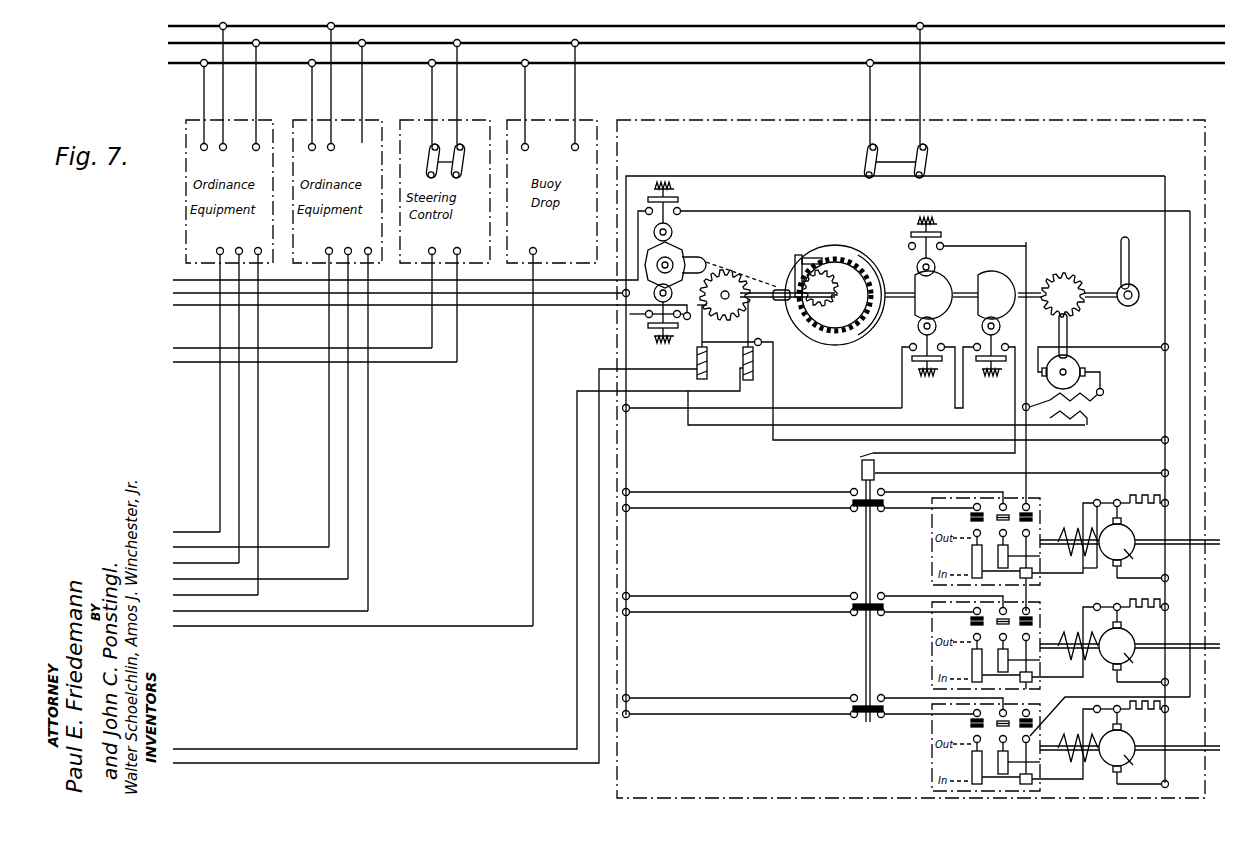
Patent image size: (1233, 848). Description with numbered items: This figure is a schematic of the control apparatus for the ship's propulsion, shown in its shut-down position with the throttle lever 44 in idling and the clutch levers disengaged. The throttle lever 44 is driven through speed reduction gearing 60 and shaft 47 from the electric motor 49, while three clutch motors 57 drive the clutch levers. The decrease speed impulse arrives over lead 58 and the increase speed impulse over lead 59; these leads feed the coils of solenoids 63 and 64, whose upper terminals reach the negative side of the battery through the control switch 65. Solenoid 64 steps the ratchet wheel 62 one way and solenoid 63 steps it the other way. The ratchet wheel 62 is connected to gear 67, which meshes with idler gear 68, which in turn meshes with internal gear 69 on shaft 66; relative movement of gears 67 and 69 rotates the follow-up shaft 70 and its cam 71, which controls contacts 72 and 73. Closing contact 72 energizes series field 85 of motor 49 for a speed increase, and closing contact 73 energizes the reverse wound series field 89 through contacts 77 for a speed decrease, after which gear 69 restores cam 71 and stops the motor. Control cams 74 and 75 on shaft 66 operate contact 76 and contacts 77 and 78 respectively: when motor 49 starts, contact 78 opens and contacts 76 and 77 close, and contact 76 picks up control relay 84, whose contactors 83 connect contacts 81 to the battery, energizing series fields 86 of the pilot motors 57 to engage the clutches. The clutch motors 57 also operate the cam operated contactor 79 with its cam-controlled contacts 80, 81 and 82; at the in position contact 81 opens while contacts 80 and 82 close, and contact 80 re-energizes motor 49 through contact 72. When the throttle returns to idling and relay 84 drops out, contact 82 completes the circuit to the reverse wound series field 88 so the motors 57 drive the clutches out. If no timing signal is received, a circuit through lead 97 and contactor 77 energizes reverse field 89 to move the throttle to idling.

The throttle lever 44 is at (1121, 248).
The shaft 47 is at (1100, 293).
The electric motor 49 is at (1088, 368).
The clutch motors 57 is at (1125, 549).
The lead 58 is at (458, 559).
The lead 59 is at (461, 748).
The speed reduction gearing 60 is at (1084, 318).
The ratchet wheel 62 is at (737, 284).
The solenoid 63 is at (886, 362).
The solenoid 64 is at (705, 377).
The control switch 65 is at (932, 161).
The shaft 66 is at (1036, 287).
The gear 67 is at (843, 283).
The idler gear 68 is at (826, 262).
The internal gear 69 is at (814, 256).
The follow-up shaft 70 is at (705, 265).
The follow-up cam 71 is at (673, 251).
The contact 72 is at (680, 204).
The contact 73 is at (657, 323).
The control cam 74 is at (1000, 286).
The control cam 75 is at (938, 284).
The contact 76 is at (944, 385).
The contact 77 is at (798, 364).
The contact 78 is at (943, 237).
The cam operated contactor 79 is at (930, 525).
The contact 80 is at (1033, 513).
The contact 81 is at (1006, 510).
The contact 82 is at (970, 526).
The contactors 83 is at (858, 511).
The control relay 84 is at (860, 467).
The series field 85 is at (1103, 396).
The series fields 86 is at (1068, 540).
The reverse wound series field 88 is at (1093, 555).
The series field 89 is at (1092, 418).
The lead 97 is at (497, 309).